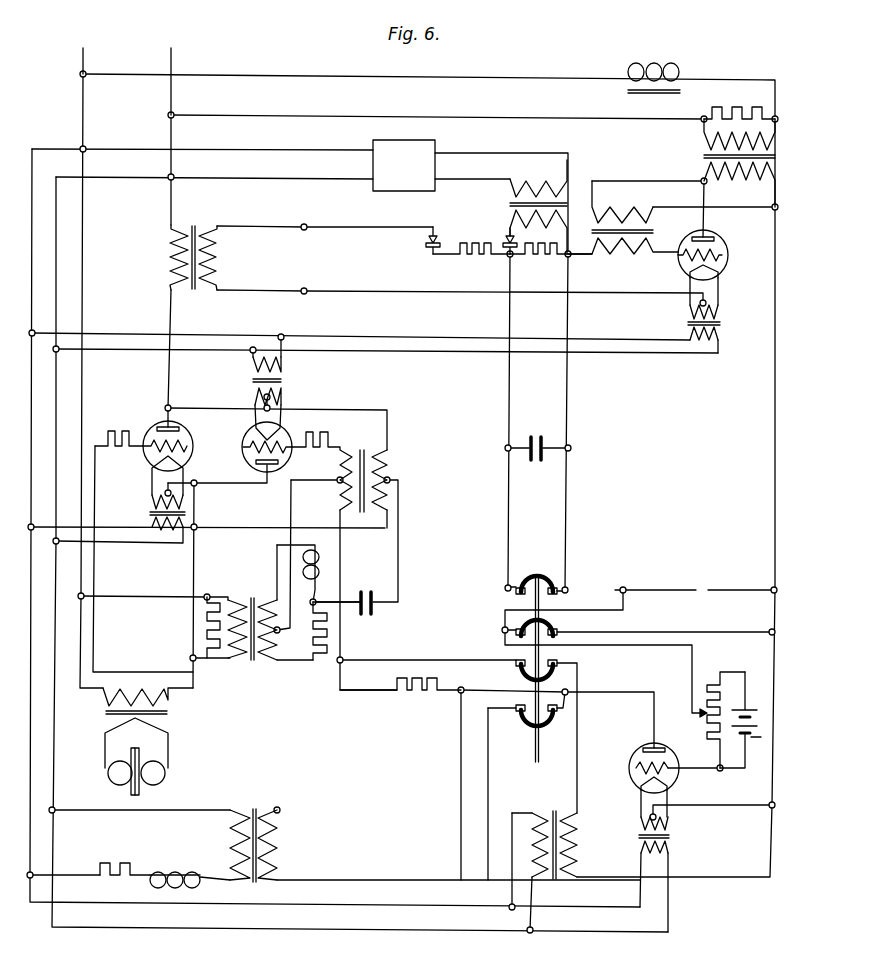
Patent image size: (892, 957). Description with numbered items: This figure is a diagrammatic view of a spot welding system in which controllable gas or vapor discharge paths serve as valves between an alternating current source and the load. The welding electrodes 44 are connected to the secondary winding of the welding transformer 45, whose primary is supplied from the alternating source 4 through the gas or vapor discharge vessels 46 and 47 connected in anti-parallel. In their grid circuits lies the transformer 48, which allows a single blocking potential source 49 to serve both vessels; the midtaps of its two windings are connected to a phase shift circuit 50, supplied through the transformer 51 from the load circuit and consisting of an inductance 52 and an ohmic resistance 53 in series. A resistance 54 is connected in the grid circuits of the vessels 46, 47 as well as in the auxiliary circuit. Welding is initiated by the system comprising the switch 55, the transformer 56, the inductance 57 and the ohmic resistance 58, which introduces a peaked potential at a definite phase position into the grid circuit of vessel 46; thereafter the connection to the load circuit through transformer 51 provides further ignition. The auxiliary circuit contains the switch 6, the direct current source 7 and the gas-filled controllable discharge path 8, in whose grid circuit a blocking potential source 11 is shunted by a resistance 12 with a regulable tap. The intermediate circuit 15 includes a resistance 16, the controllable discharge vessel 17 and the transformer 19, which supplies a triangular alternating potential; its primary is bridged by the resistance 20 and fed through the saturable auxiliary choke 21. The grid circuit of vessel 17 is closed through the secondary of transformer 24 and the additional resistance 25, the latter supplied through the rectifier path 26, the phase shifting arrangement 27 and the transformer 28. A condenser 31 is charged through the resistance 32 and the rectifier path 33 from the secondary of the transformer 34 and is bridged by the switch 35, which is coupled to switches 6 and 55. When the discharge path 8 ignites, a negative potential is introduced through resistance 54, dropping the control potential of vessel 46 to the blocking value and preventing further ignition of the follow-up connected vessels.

The alternating source 4 is at (84, 60).
The saturable auxiliary choke 21 is at (662, 68).
The resistance 20 is at (732, 106).
The transformer 19 is at (703, 156).
The phase shifting arrangement 27 is at (432, 148).
The transformer 28 is at (510, 203).
The transformer 34 is at (195, 224).
The rectifier path 33 is at (425, 245).
The rectifier path 26 is at (506, 237).
The resistance 32 is at (482, 256).
The additional resistance 25 is at (533, 257).
The transformer 24 is at (653, 231).
The gas or vapor filled controllable discharge vessel 17 is at (722, 255).
The intermediate circuit 15 is at (762, 296).
The condenser 31 is at (538, 436).
The gas or vapor discharge vessel 46 is at (143, 460).
The gas or vapor discharge vessel 47 is at (243, 460).
The transformer 48 is at (360, 450).
The inductance 52 is at (323, 556).
The transformer 51 is at (253, 598).
The blocking potential source 49 is at (368, 591).
The phase shift circuit 50 is at (378, 638).
The ohmic resistance 53 is at (313, 637).
The switch 35 is at (540, 575).
The resistance 16 is at (560, 663).
The switch 6 is at (518, 675).
The resistance 54 is at (425, 692).
The switch 55 is at (523, 722).
The direct current source 7 is at (553, 812).
The gas-filled controllable discharge path 8 is at (645, 748).
The resistance with regulable tap 12 is at (705, 728).
The blocking potential source 11 is at (741, 720).
The welding transformer 45 is at (170, 712).
The welding electrodes 44 is at (165, 786).
The ohmic resistance 58 is at (130, 863).
The inductance 57 is at (181, 869).
The transformer 56 is at (257, 881).